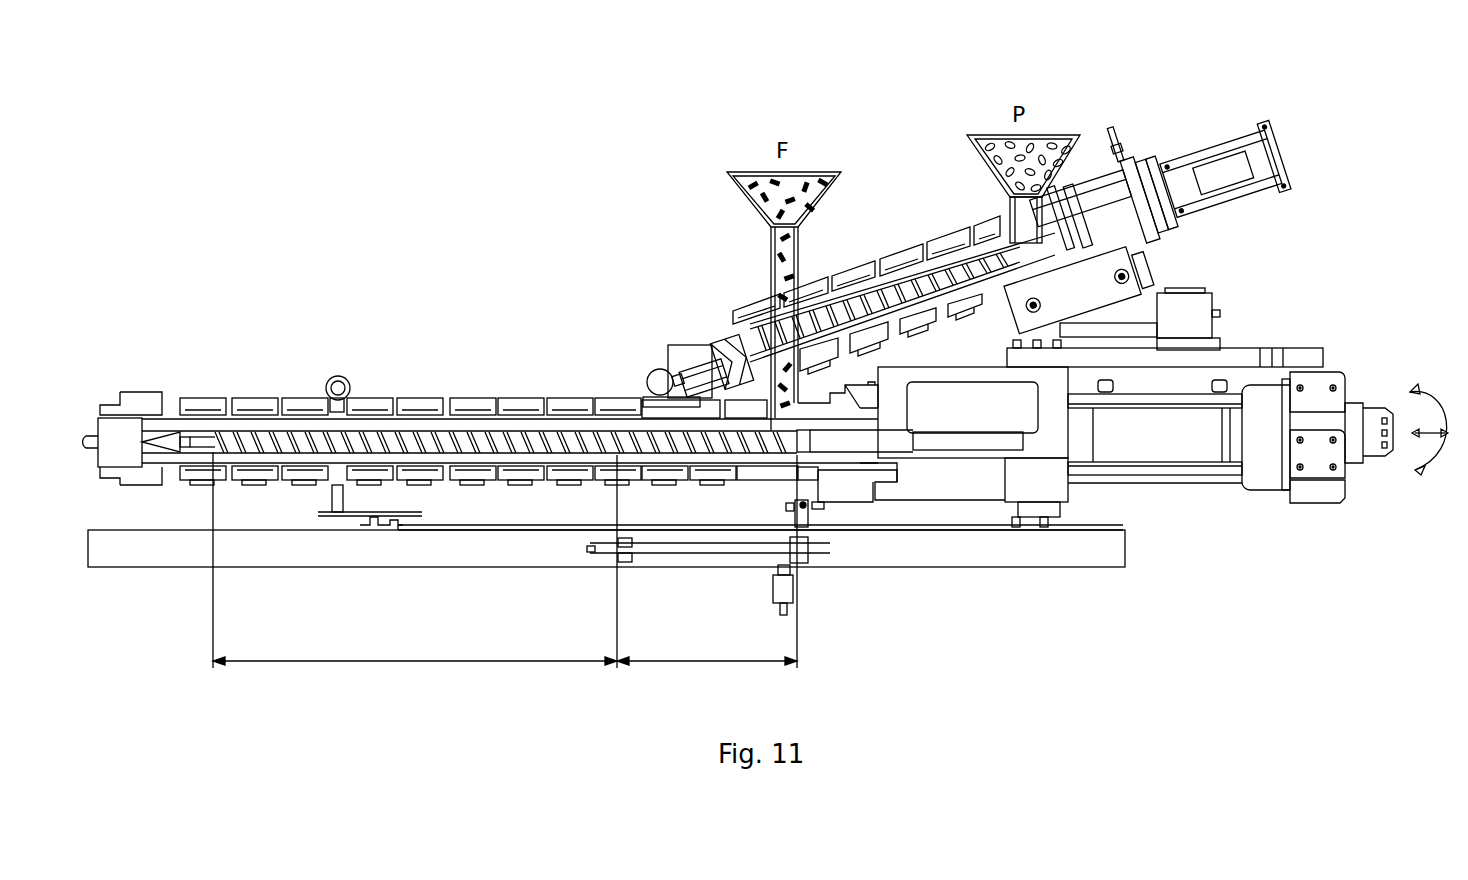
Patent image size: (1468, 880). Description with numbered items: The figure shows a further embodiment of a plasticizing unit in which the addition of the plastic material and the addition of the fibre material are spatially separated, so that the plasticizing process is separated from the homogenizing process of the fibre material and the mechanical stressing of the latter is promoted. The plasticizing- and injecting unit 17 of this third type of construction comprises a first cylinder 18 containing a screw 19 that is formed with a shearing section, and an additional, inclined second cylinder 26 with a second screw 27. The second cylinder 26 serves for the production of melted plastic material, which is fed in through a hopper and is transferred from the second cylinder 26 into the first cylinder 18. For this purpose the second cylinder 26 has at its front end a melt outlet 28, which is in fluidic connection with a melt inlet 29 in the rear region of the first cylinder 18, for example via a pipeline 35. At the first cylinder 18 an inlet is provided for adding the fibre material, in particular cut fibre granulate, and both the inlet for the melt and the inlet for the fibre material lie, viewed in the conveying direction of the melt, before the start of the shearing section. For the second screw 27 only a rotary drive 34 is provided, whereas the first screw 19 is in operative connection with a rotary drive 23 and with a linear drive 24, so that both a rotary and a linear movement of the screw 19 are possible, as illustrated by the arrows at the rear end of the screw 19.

The plasticizing- and injecting unit 17 is at (467, 268).
The first cylinder 18 is at (467, 428).
The screw 19 is at (588, 428).
The rotary drive 23 is at (1338, 466).
The linear drive 24 is at (1172, 430).
The second cylinder 26 is at (943, 253).
The second screw 27 is at (940, 260).
The melt outlet 28 is at (735, 393).
The melt inlet 29 is at (692, 423).
The rotary drive 34 is at (1240, 165).
The pipeline 35 is at (690, 425).